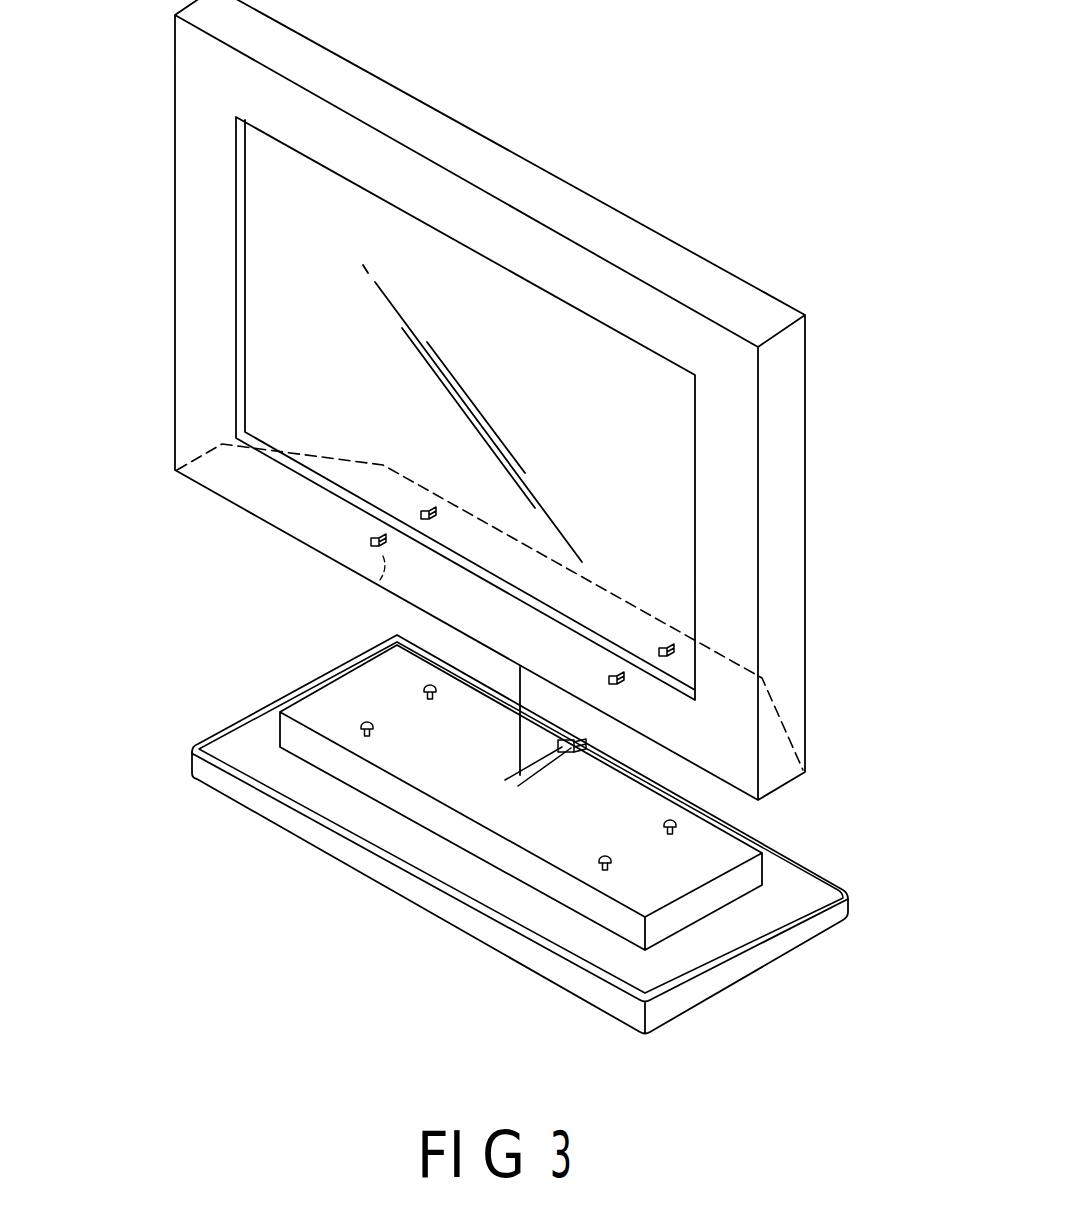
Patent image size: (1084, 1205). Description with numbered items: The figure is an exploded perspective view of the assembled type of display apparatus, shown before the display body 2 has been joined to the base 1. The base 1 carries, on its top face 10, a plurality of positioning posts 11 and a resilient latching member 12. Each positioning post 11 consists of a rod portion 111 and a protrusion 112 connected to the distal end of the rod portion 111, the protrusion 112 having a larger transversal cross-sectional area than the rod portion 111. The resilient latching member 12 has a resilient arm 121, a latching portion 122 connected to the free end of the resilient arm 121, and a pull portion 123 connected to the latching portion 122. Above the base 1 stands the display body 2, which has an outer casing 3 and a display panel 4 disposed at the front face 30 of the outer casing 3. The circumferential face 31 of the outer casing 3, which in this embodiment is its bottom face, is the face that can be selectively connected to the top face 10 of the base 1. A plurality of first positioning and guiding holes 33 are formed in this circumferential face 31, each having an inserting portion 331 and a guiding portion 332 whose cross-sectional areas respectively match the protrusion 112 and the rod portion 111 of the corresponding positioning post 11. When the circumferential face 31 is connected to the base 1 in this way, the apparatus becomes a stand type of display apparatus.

The base 1 is at (758, 997).
The top face 10 is at (730, 843).
The positioning post 11 is at (509, 1042).
The rod portion 111 is at (603, 872).
The protrusion 112 is at (599, 862).
The resilient latching member 12 is at (367, 970).
The resilient arm 121 is at (562, 745).
The latching portion 122 is at (565, 752).
The pull portion 123 is at (577, 752).
The display body 2 is at (913, 450).
The outer casing 3 is at (806, 456).
The display panel 4 is at (682, 508).
The front face 30 is at (190, 230).
The circumferential face 31 is at (777, 752).
The first positioning and guiding hole 33 is at (261, 617).
The inserting portion 331 is at (372, 541).
The guiding portion 332 is at (385, 552).